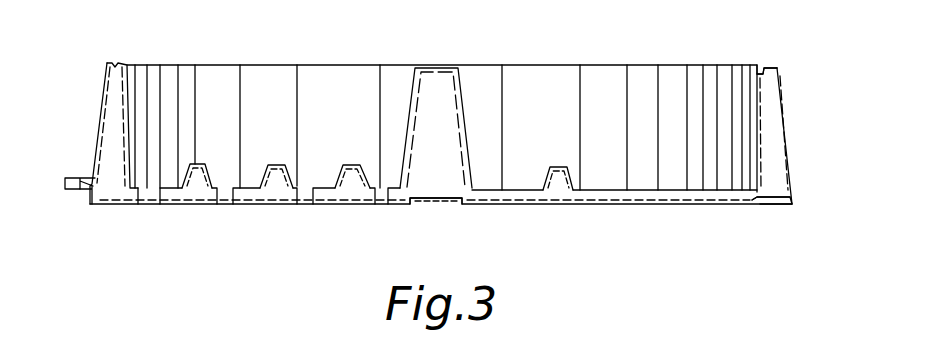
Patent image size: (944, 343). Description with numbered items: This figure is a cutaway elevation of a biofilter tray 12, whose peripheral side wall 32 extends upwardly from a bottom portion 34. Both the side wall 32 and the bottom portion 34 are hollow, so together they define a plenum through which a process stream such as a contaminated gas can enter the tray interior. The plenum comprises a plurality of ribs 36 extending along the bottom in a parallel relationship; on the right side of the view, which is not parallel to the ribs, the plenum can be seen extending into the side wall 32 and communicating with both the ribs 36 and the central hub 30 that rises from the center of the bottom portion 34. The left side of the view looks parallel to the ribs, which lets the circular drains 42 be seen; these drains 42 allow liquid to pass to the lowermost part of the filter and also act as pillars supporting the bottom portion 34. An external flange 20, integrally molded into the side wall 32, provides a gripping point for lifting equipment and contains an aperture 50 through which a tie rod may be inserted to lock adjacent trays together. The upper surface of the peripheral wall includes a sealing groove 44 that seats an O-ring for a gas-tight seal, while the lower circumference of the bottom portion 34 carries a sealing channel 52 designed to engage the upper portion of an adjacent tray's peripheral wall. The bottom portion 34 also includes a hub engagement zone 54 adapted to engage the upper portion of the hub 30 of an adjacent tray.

The tray 12 is at (448, 133).
The external flange 20 is at (67, 190).
The central hub 30 is at (463, 90).
The peripheral side wall 32 is at (603, 65).
The bottom portion 34 is at (596, 188).
The rib 36 is at (271, 164).
The circular drain 42 is at (222, 197).
The sealing groove 44 is at (763, 70).
The aperture 50 is at (81, 187).
The sealing channel 52 is at (770, 210).
The hub engagement zone 54 is at (433, 207).